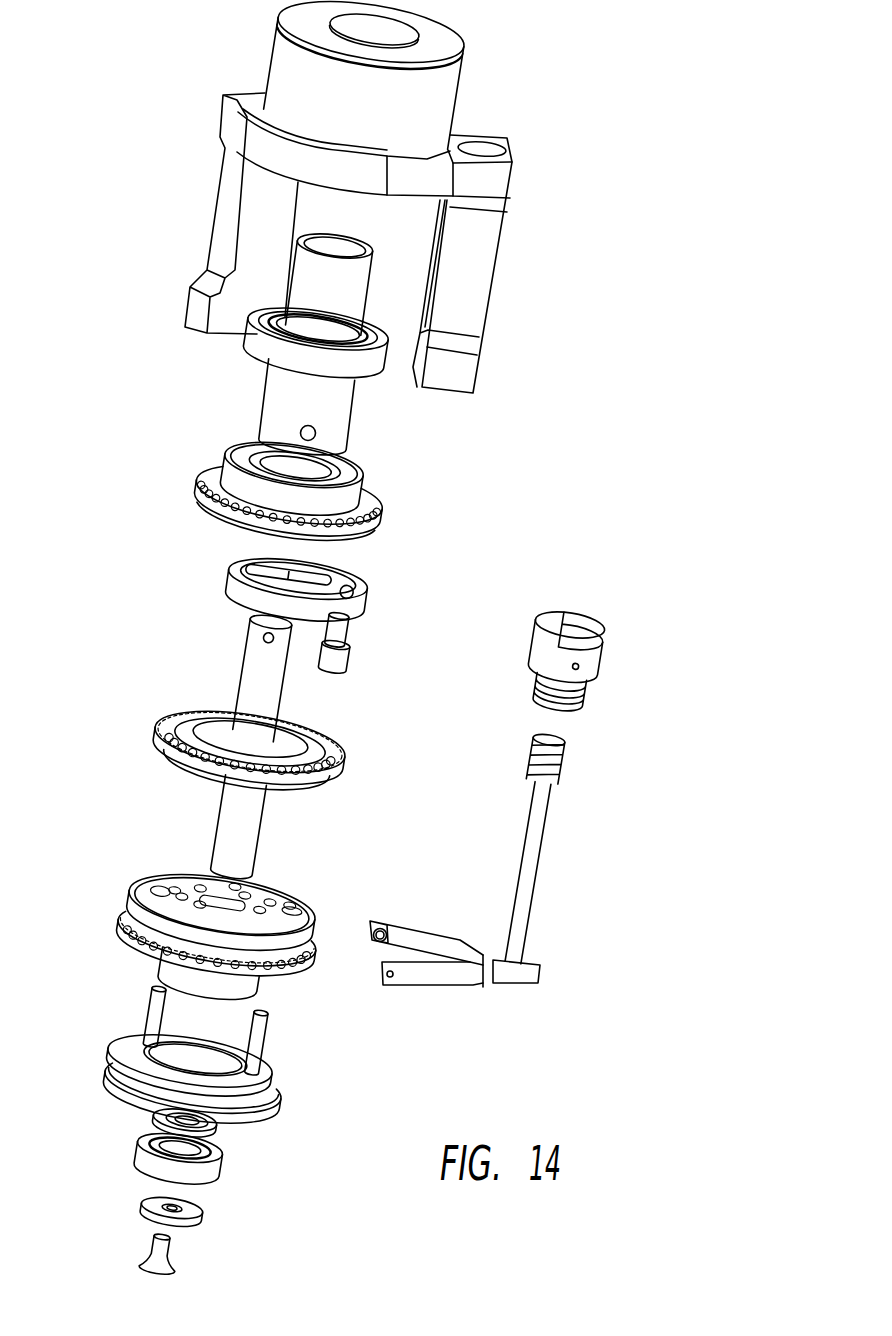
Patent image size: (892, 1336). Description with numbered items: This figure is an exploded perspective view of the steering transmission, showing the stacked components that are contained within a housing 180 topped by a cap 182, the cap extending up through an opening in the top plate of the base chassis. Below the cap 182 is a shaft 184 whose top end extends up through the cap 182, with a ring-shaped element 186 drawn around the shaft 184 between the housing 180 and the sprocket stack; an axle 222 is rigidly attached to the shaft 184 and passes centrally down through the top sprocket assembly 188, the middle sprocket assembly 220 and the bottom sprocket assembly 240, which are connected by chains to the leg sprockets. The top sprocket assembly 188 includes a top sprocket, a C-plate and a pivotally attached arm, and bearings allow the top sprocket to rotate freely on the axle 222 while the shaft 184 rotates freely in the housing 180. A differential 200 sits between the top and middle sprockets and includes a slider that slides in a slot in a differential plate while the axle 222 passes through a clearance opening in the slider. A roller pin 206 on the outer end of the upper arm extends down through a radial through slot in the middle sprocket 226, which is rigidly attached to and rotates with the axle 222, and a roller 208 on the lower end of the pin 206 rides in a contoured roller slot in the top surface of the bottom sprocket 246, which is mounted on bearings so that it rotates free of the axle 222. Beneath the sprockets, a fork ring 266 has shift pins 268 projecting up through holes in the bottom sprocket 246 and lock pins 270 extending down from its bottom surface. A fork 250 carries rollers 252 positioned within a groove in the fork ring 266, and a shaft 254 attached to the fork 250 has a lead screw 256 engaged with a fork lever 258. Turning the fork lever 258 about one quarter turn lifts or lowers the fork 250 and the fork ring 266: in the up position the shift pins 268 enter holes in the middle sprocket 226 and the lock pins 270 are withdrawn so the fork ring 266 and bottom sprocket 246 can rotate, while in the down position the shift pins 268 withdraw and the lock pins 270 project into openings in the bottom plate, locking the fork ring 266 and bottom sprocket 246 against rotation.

The housing 180 is at (502, 243).
The cap 182 is at (453, 73).
The shaft 184 is at (337, 402).
The bearing 186 is at (262, 350).
The top sprocket assembly 188 is at (357, 488).
The differential 200 is at (372, 598).
The roller pin 206 is at (345, 623).
The roller 208 is at (352, 658).
The middle sprocket assembly 220 is at (281, 747).
The axle 222 is at (230, 830).
The middle sprocket 226 is at (163, 720).
The bottom sprocket assembly 240 is at (188, 909).
The bottom sprocket 246 is at (127, 922).
The fork 250 is at (455, 957).
The rollers 252 is at (378, 928).
The shaft 254 is at (533, 852).
The lead screw 256 is at (563, 747).
The fork lever 258 is at (593, 647).
The fork ring 266 is at (237, 1097).
The shift pins 268 is at (152, 1013).
The lock pins 270 is at (150, 1103).